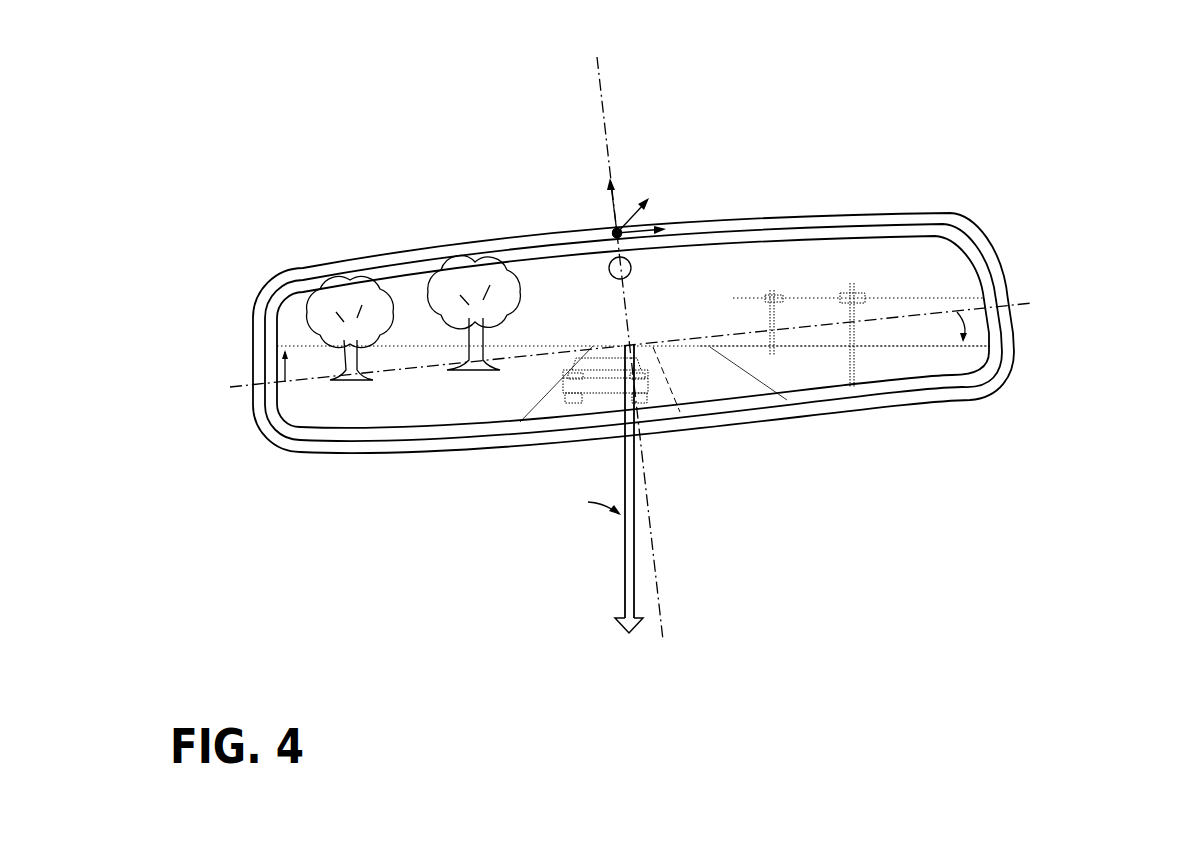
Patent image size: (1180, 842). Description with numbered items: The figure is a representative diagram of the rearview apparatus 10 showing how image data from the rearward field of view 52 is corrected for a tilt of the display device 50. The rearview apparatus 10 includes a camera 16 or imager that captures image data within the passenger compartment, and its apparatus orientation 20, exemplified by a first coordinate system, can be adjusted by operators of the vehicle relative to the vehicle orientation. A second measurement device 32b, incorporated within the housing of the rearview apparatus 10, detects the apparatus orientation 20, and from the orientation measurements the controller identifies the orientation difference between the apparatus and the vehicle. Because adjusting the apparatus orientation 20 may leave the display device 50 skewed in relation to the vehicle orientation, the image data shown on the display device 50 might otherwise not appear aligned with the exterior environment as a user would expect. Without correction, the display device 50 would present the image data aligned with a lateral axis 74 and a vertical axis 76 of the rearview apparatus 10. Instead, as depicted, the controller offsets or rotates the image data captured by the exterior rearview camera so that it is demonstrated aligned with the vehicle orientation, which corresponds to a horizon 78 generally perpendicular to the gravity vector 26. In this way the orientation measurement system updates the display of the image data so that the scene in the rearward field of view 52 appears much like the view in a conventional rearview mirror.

The rearview apparatus 10 is at (908, 150).
The camera 16 is at (635, 268).
The apparatus orientation 20 is at (592, 221).
The second measurement device 32b is at (536, 203).
The gravity vector 26 is at (627, 593).
The display device 50 is at (1065, 243).
The rearward field of view 52 is at (386, 409).
The lateral axis 74 is at (1013, 305).
The vertical axis 76 is at (657, 590).
The horizon 78 is at (913, 347).